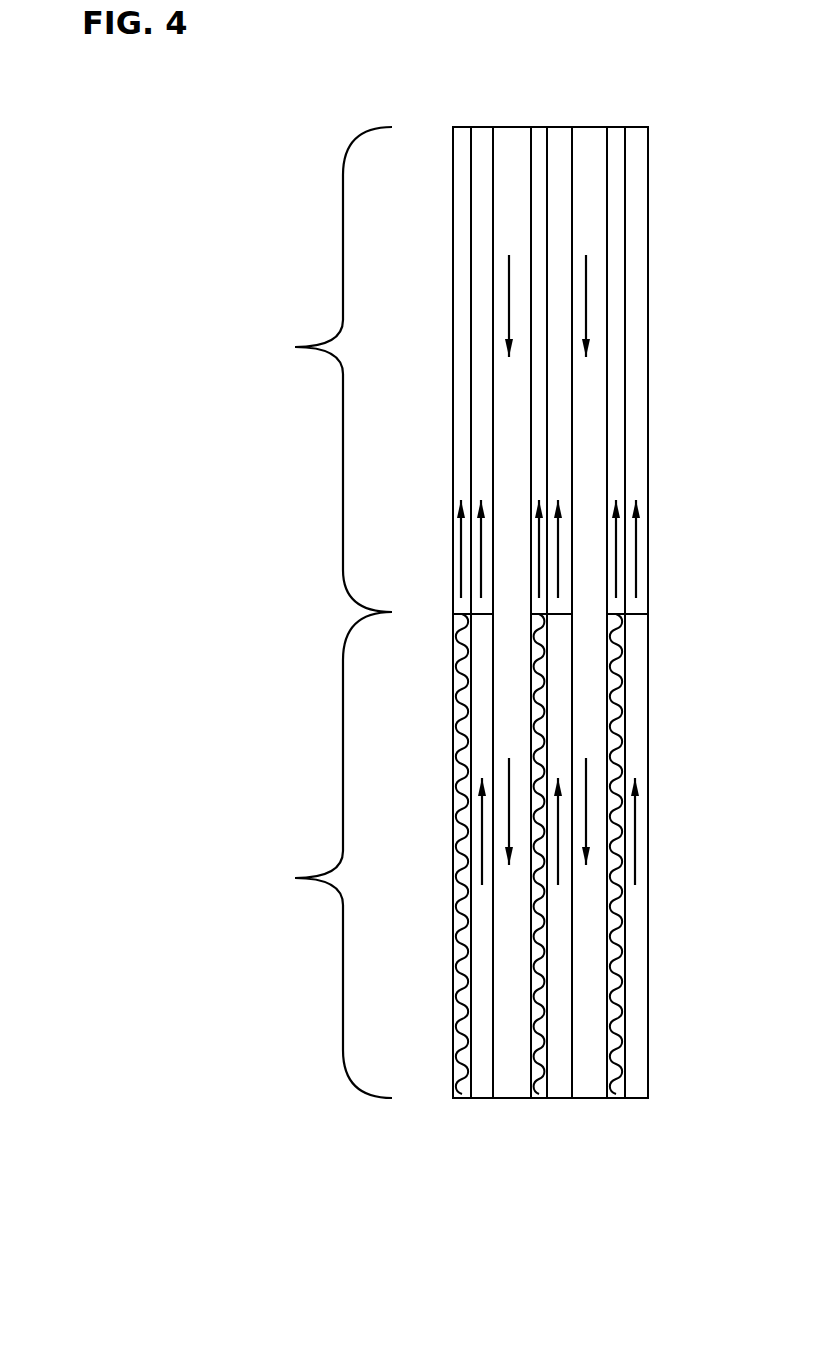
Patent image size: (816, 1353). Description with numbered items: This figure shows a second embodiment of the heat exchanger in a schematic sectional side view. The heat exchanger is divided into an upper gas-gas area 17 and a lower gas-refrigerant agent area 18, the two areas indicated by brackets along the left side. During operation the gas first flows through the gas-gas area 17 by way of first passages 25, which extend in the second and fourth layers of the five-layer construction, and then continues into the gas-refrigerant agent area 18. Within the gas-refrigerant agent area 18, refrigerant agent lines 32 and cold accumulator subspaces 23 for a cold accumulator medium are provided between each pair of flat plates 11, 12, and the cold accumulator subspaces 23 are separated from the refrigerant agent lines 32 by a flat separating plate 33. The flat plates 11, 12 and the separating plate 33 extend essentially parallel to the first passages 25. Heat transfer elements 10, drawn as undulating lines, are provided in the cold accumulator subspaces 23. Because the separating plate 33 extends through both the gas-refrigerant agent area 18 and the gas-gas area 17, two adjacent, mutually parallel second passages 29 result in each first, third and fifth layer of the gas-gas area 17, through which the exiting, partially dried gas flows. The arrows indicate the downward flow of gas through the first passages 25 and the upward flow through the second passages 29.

The gas-gas area 17 is at (454, 370).
The gas-refrigerant agent area 18 is at (454, 855).
The first passages 25 is at (590, 150).
The separating plate 33 is at (470, 210).
The second passages 29 is at (463, 330).
The heat transfer elements 10 is at (465, 763).
The cold accumulator subspaces 23 is at (460, 963).
The refrigerant agent lines 32 is at (483, 983).
The flat plate 11 is at (457, 1057).
The flat plate 12 is at (494, 1053).